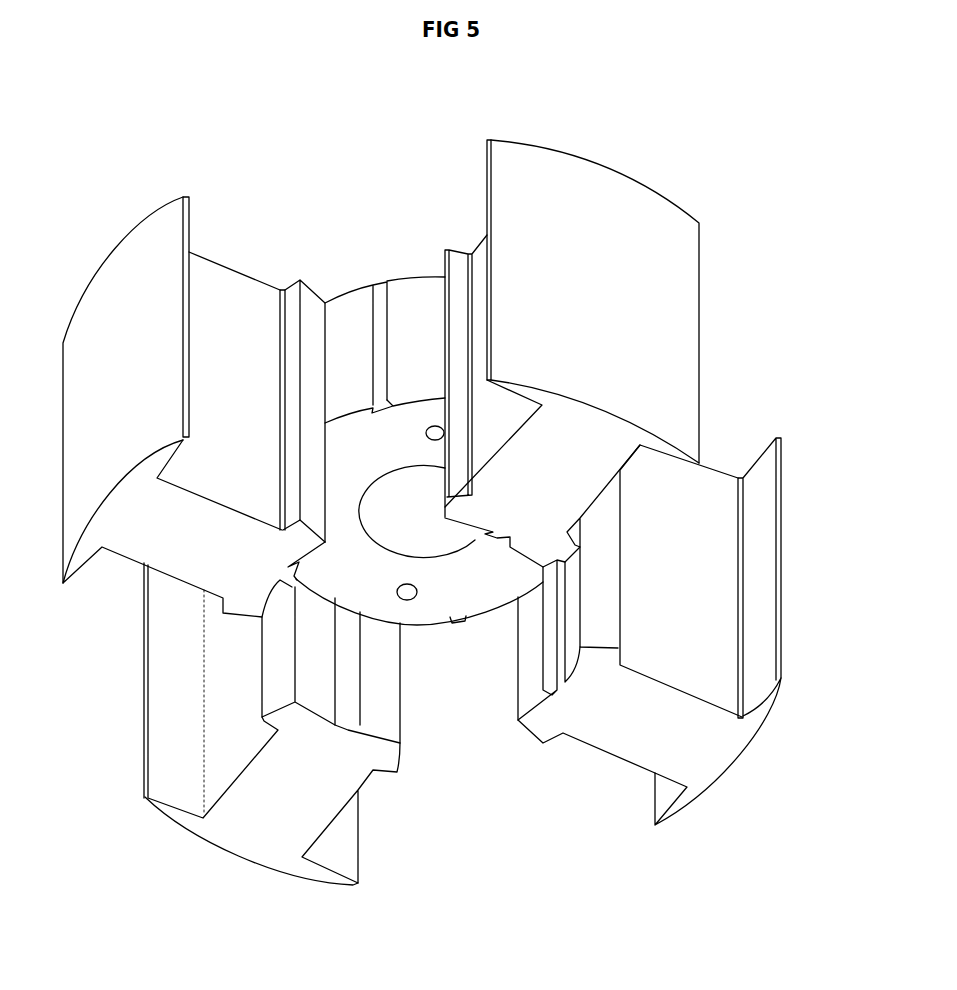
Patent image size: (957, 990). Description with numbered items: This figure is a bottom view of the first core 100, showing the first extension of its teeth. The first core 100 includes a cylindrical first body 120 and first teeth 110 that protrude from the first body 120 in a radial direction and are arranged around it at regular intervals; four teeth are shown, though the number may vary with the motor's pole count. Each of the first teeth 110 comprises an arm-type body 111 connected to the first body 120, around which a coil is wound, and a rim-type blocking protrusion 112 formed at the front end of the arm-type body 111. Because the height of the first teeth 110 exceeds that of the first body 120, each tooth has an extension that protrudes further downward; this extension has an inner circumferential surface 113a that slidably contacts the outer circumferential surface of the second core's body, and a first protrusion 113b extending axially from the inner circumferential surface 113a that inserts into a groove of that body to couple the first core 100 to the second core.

The first core 100 is at (372, 170).
The first teeth 110 is at (713, 636).
The arm-type body 111 is at (685, 623).
The rim-type blocking protrusion 112 is at (743, 763).
The inner circumferential surface 113a is at (545, 678).
The first protrusion 113b is at (542, 676).
The first body 120 is at (432, 592).